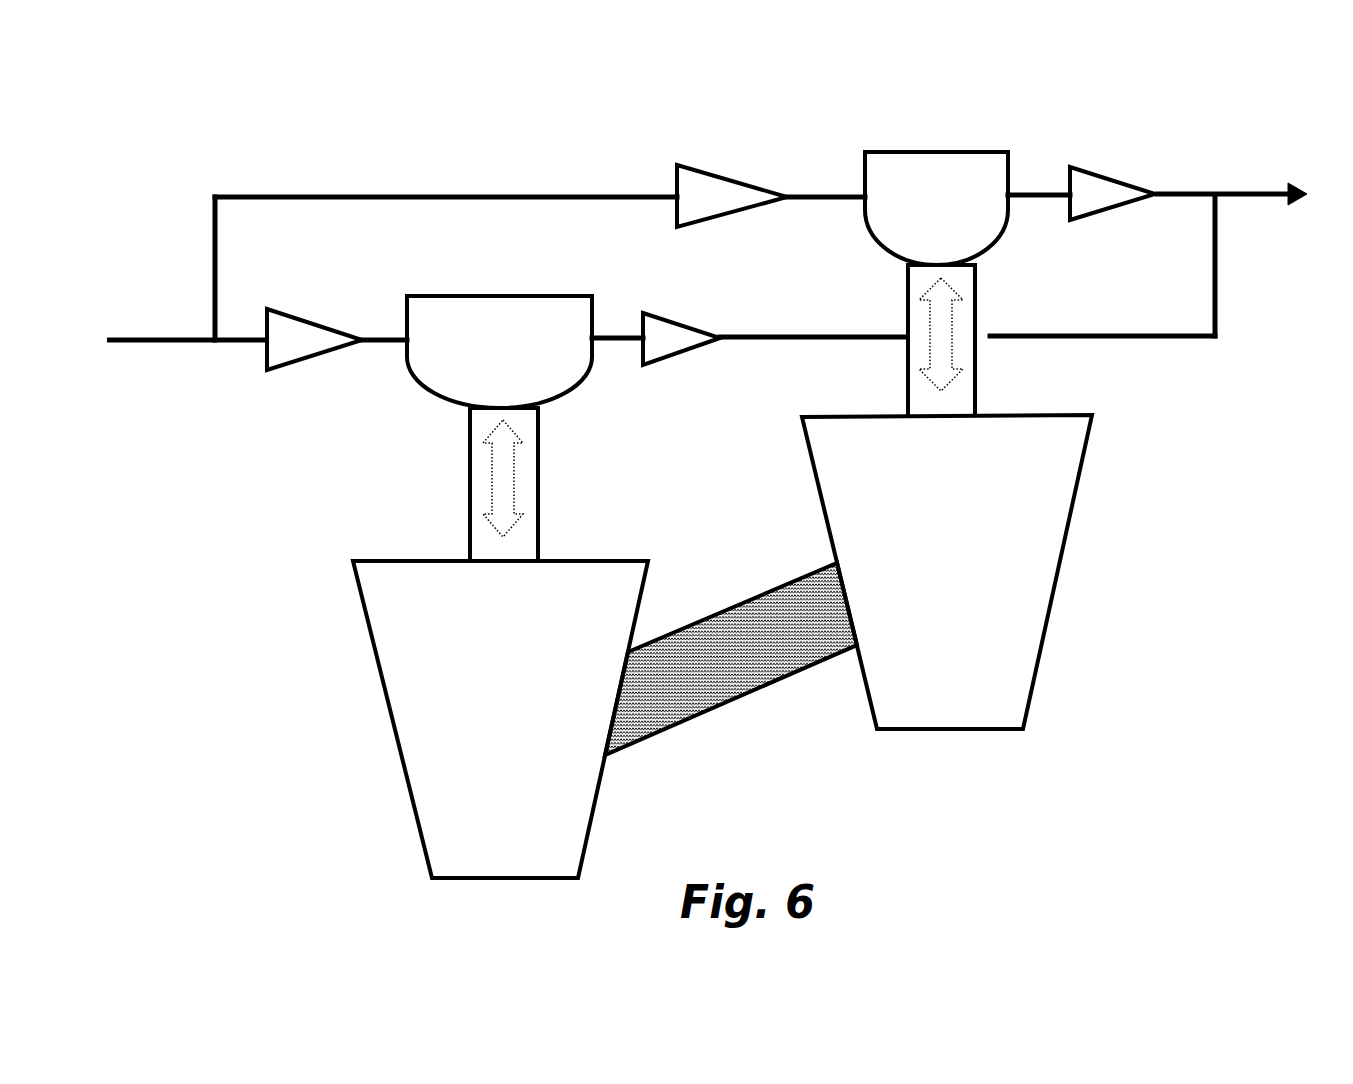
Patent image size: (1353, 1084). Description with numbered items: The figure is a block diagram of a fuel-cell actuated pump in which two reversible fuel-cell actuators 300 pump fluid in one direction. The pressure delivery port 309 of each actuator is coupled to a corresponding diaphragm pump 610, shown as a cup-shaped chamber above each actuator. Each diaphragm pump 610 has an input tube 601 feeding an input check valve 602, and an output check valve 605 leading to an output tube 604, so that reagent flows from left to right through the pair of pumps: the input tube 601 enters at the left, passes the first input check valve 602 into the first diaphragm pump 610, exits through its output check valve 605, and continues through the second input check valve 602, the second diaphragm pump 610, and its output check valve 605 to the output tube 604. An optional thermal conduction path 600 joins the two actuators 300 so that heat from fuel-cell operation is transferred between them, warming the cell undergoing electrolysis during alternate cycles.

The reversible fuel-cell actuator 300 is at (588, 560).
The pressure delivery port 309 is at (469, 435).
The thermal conduction path 600 is at (763, 685).
The input tube 601 is at (163, 343).
The input check valve 602 is at (288, 310).
The output tube 604 is at (1263, 197).
The output check valve 605 is at (683, 318).
The diaphragm pump 610 is at (512, 294).